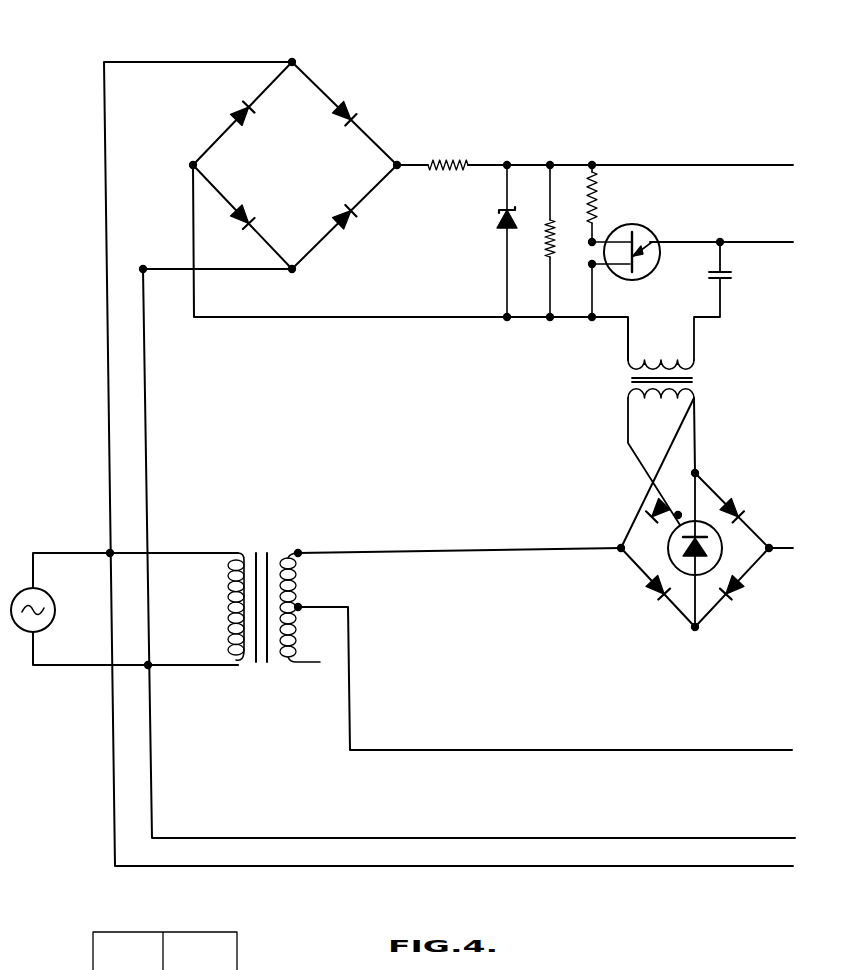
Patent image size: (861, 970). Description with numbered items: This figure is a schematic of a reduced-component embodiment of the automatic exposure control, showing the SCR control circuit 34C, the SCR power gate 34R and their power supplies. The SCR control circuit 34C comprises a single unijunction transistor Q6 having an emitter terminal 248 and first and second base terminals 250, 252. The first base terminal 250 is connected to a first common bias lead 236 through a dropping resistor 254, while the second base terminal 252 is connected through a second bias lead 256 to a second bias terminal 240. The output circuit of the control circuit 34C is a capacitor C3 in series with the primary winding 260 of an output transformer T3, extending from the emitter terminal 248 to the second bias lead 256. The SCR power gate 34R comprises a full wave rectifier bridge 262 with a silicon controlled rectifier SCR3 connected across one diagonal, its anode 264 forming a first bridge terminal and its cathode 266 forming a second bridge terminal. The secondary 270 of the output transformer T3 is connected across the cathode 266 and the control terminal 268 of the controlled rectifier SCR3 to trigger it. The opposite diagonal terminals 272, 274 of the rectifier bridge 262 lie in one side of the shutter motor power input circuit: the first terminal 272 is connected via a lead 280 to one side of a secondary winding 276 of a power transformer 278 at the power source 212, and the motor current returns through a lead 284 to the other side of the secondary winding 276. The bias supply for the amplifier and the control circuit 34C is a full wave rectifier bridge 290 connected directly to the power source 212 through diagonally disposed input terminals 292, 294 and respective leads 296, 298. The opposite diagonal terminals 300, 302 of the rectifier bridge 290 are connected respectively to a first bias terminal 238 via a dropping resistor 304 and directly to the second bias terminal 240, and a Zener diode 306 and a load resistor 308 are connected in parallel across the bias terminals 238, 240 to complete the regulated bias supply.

The power source 212 is at (78, 568).
The first common bias lead 236 is at (703, 162).
The first bias terminal 238 is at (548, 162).
The second bias terminal 240 is at (508, 319).
The emitter terminal 248 is at (721, 238).
The first base terminal 250 is at (594, 240).
The second base terminal 252 is at (590, 266).
The dropping resistor 254 is at (617, 150).
The second bias lead 256 is at (567, 320).
The primary winding 260 is at (672, 358).
The full wave rectifier bridge 262 is at (638, 527).
The anode 264 is at (693, 628).
The cathode 266 is at (696, 472).
The control terminal 268 is at (678, 512).
The secondary 270 is at (633, 398).
The first terminal 272 is at (621, 550).
The second terminal 274 is at (771, 546).
The secondary winding 276 is at (298, 584).
The power transformer 278 is at (292, 596).
The lead 280 is at (488, 550).
The lead 284 is at (572, 751).
The full wave rectifier bridge 290 is at (307, 170).
The input terminal 292 is at (293, 60).
The input terminal 294 is at (295, 269).
The lead 296 is at (107, 432).
The lead 298 is at (146, 432).
The terminal 300 is at (397, 162).
The terminal 302 is at (191, 165).
The dropping resistor 304 is at (456, 162).
The Zener diode 306 is at (504, 214).
The load resistor 308 is at (560, 213).
The unijunction transistor Q6 is at (646, 226).
The capacitor C3 is at (726, 272).
The output transformer T3 is at (660, 434).
The silicon controlled rectifier SCR3 is at (667, 558).
The SCR control circuit 34C is at (683, 300).
The SCR power gate 34R is at (686, 520).